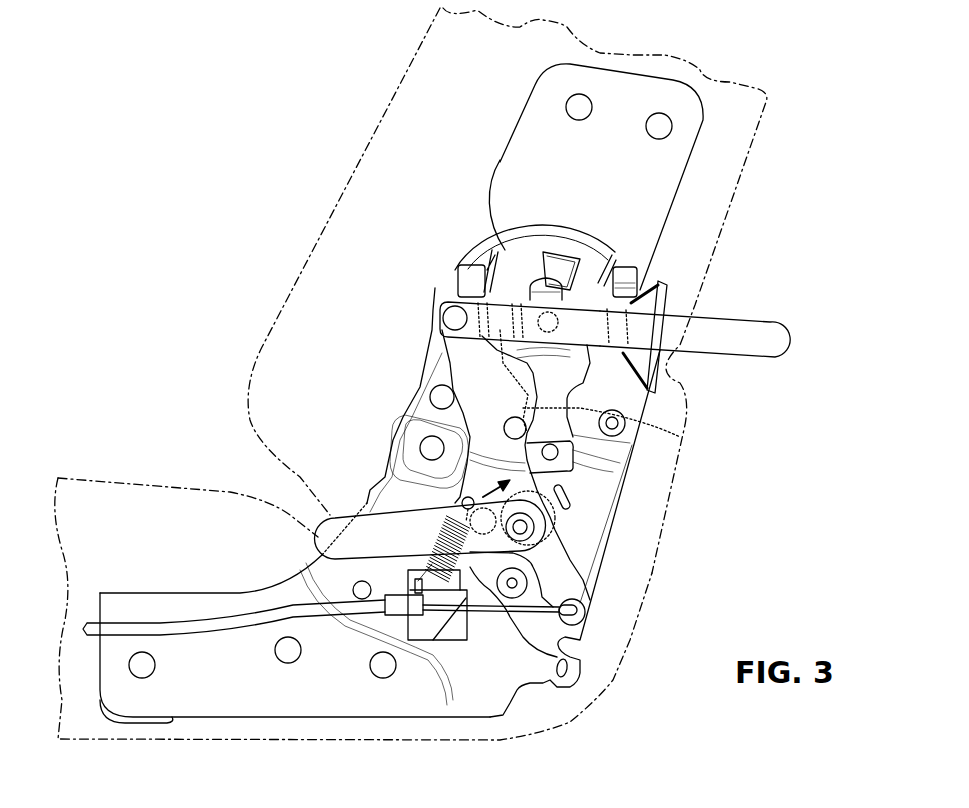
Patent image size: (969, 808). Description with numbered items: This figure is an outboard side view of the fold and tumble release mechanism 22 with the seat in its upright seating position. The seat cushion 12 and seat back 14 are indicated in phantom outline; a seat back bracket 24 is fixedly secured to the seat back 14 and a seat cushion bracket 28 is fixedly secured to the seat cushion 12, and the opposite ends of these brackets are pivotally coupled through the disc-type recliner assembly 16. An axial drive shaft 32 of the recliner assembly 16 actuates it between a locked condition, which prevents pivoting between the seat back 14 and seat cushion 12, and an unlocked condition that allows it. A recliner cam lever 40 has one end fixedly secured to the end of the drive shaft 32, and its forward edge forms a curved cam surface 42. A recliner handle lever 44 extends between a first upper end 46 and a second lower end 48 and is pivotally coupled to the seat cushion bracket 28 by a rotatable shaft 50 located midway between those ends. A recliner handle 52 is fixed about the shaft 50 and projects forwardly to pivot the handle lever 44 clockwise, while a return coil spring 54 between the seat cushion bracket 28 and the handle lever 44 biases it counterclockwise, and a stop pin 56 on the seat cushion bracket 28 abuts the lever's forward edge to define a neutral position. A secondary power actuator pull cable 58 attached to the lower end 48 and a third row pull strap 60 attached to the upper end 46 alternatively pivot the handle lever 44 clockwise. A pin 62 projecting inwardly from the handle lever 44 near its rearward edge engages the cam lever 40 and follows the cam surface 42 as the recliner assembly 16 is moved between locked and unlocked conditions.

The seat cushion 12 is at (76, 478).
The seat back 14 is at (412, 62).
The recliner assembly 16 is at (485, 243).
The release mechanism 22 is at (815, 189).
The seat back bracket 24 is at (647, 94).
The seat cushion bracket 28 is at (120, 723).
The axial drive shaft 32 is at (560, 312).
The recliner cam lever 40 is at (568, 382).
The cam surface 42 is at (680, 437).
The recliner handle lever 44 is at (450, 355).
The first upper end 46 is at (440, 283).
The second lower end 48 is at (596, 605).
The rotatable shaft 50 is at (532, 527).
The recliner handle 52 is at (373, 522).
The return coil spring 54 is at (572, 657).
The stop pin 56 is at (437, 398).
The secondary power actuator pull cable 58 is at (173, 634).
The third row pull strap 60 is at (760, 318).
The pin 62 is at (526, 432).